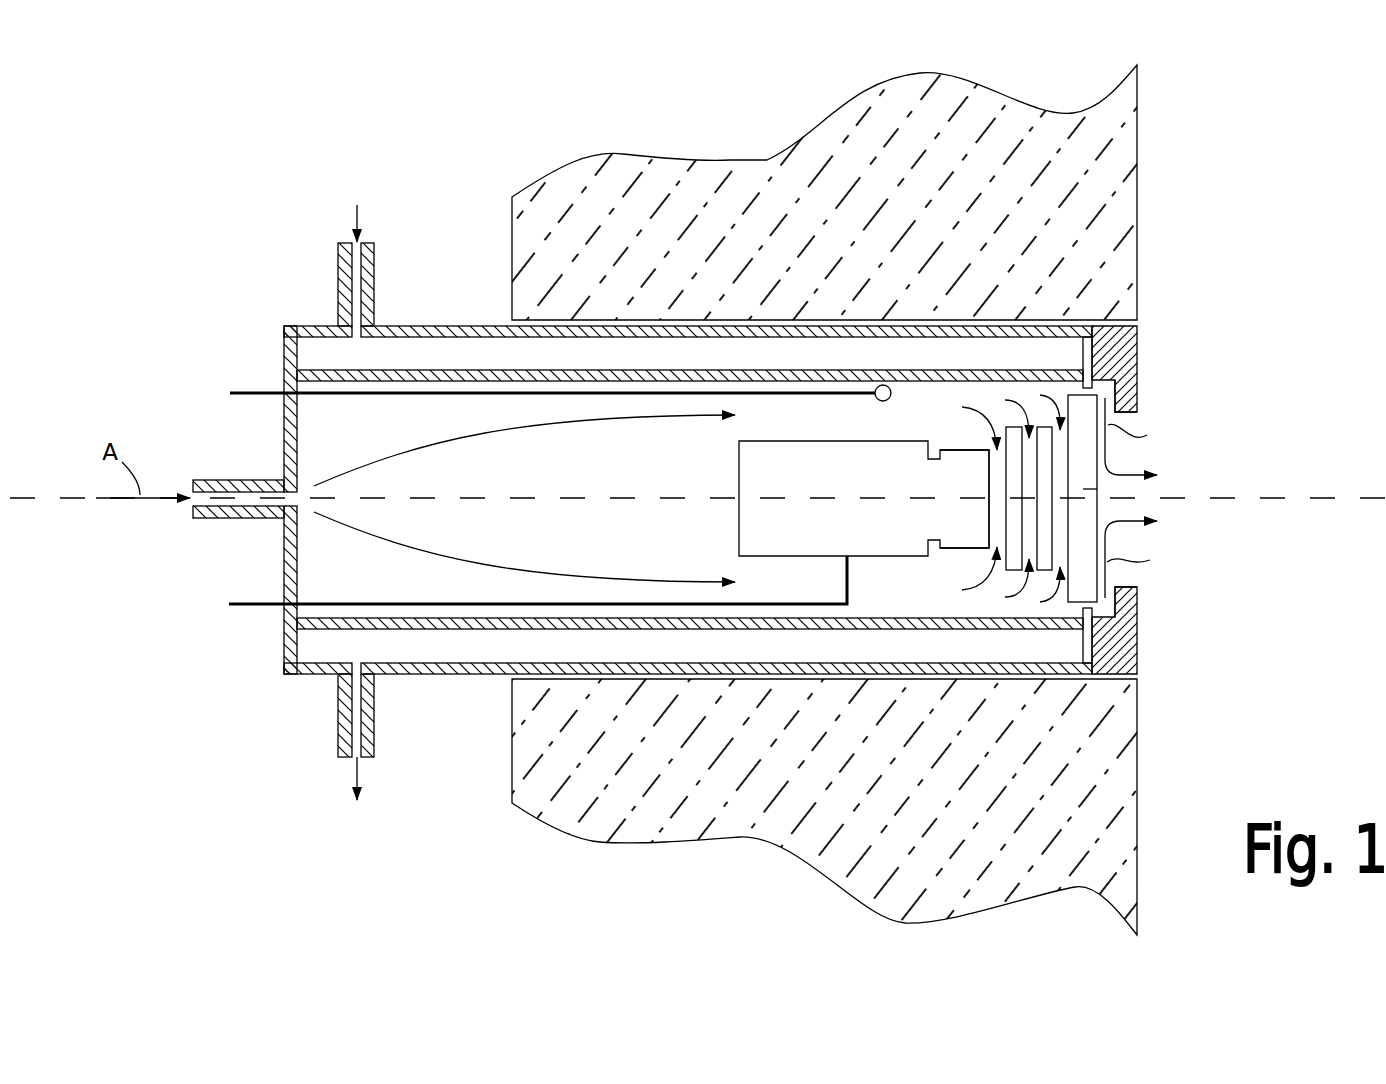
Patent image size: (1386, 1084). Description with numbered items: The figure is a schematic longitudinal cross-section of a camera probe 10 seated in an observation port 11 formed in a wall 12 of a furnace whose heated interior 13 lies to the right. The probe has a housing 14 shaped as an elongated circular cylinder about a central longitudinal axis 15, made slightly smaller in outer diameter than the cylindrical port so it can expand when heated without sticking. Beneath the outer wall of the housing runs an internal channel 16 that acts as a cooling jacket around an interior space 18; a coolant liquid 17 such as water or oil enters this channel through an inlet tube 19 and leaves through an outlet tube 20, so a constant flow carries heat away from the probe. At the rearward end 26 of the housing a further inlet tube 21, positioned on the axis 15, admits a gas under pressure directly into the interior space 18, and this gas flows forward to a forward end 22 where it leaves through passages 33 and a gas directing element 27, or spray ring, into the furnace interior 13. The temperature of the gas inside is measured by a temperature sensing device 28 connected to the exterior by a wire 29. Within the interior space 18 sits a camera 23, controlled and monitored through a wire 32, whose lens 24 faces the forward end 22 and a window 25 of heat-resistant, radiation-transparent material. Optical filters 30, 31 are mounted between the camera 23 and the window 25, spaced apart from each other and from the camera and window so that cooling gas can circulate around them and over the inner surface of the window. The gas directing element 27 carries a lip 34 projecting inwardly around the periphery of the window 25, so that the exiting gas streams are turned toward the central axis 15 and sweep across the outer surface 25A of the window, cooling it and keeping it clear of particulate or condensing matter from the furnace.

The camera probe 10 is at (292, 266).
The observation port 11 is at (651, 450).
The wall 12 is at (811, 245).
The heated interior 13 is at (1273, 251).
The housing 14 is at (420, 674).
The central longitudinal axis 15 is at (1332, 495).
The internal channel 16 is at (721, 365).
The coolant liquid 17 is at (356, 493).
The interior space 18 is at (599, 548).
The inlet tube 19 is at (376, 288).
The outlet tube 20 is at (338, 700).
The inlet tube 21 is at (229, 480).
The forward end 22 is at (1138, 352).
The camera 23 is at (829, 487).
The lens 24 is at (953, 535).
The window 25 is at (1097, 490).
The outer surface 25A is at (1097, 503).
The rearward end 26 is at (285, 542).
The gas directing element 27 is at (1138, 634).
The temperature sensing device 28 is at (880, 402).
The wire 29 is at (390, 393).
The optical filter 30 is at (1018, 473).
The optical filter 31 is at (1047, 483).
The wire 32 is at (245, 606).
The passages 33 is at (1083, 372).
The lip 34 is at (1138, 396).